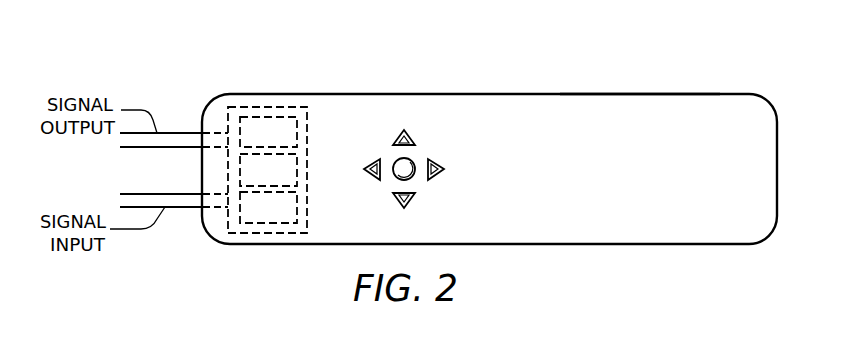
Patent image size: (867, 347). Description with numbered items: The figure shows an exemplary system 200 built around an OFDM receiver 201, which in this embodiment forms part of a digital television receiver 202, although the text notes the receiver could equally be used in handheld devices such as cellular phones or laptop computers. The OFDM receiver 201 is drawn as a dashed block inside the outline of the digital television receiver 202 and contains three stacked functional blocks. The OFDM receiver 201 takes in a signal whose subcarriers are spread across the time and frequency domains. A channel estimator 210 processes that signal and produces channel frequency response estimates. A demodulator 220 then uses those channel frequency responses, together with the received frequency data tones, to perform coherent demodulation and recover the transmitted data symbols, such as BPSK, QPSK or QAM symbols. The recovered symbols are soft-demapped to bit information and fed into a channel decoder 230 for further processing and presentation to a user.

The system 200 is at (563, 74).
The OFDM receiver 201 is at (285, 105).
The digital television receiver 202 is at (631, 94).
The channel estimator 210 is at (283, 142).
The demodulator 220 is at (283, 180).
The channel decoder 230 is at (283, 218).